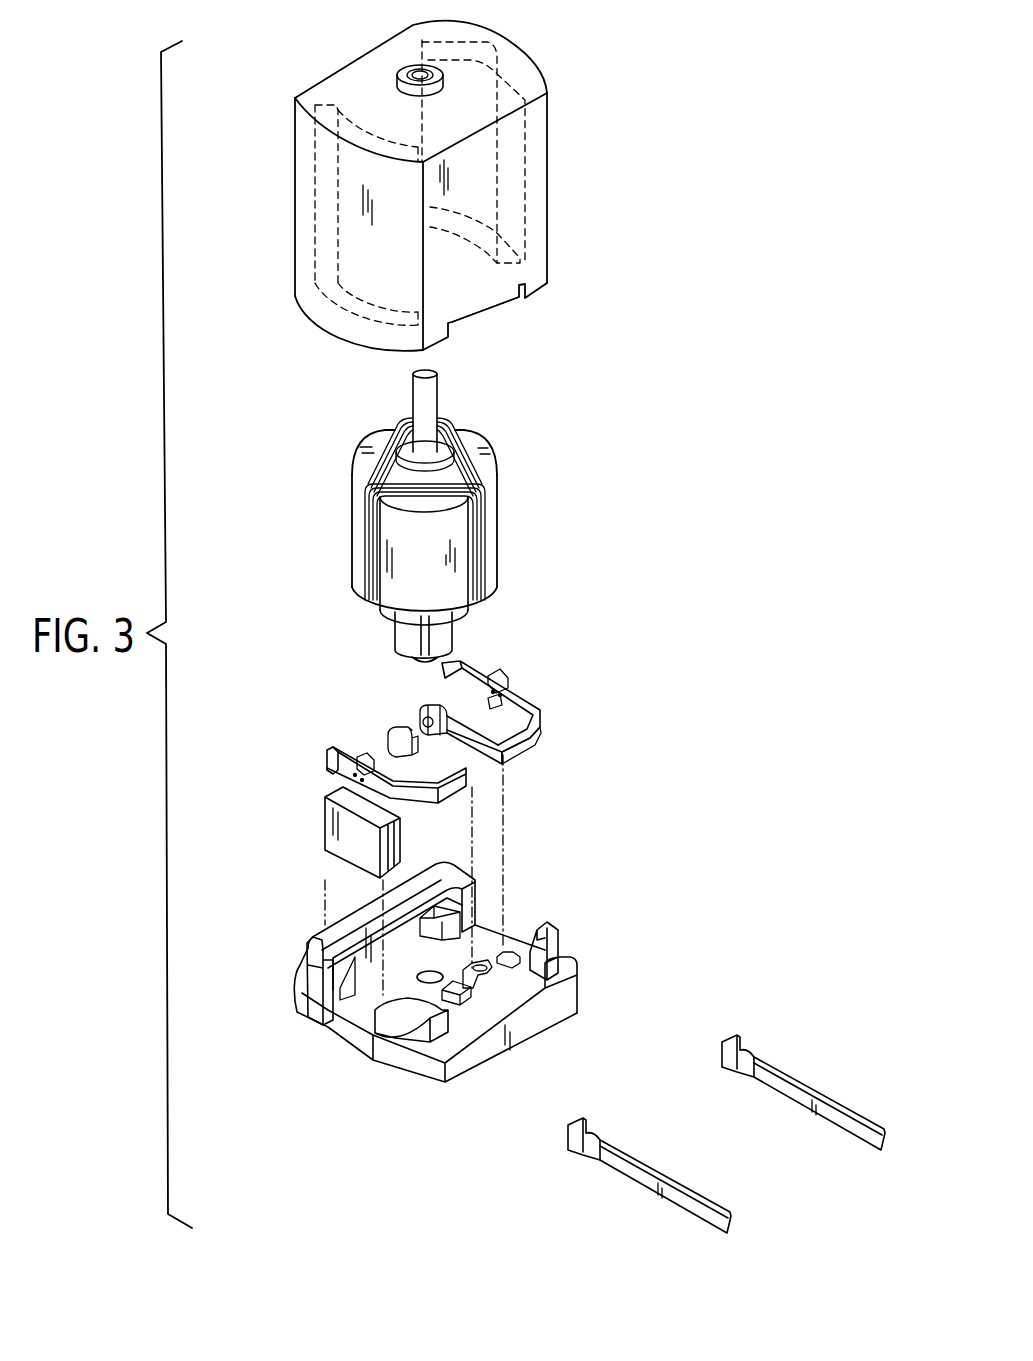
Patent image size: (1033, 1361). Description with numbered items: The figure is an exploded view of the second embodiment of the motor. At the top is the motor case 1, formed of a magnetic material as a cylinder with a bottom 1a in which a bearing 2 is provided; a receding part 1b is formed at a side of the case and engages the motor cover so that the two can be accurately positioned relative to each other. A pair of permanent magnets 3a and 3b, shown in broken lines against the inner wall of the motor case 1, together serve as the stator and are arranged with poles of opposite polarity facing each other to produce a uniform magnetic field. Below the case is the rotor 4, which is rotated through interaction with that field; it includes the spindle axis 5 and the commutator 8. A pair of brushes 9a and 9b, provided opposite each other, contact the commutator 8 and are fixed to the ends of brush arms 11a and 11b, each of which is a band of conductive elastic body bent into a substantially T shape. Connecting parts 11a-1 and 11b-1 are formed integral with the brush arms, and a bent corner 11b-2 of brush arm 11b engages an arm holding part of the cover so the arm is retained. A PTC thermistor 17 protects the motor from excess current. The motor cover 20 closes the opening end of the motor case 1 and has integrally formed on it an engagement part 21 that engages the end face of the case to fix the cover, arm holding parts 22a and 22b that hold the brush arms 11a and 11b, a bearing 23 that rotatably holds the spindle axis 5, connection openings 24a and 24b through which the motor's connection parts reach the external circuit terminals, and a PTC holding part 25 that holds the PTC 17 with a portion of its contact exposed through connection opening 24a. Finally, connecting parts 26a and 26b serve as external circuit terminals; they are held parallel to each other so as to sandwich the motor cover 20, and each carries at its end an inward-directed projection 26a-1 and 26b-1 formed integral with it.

The motor case 1 is at (558, 177).
The bottom 1a is at (372, 68).
The receding part 1b is at (485, 305).
The bearing 2 is at (440, 82).
The permanent magnet 3a is at (305, 257).
The permanent magnet 3b is at (547, 210).
The rotor 4 is at (500, 461).
The spindle axis 5 is at (432, 400).
The commutator 8 is at (440, 632).
The brush 9a is at (392, 728).
The brush 9b is at (426, 702).
The brush arm 11a is at (325, 769).
The connecting part 11a-1 is at (362, 757).
The brush arm 11b is at (552, 695).
The connecting part 11b-1 is at (503, 680).
The bent corner 11b-2 is at (518, 752).
The PTC thermistor 17 is at (332, 832).
The motor cover 20 is at (584, 951).
The engagement part 21 is at (408, 1015).
The arm holding part 22a is at (472, 993).
The arm holding part 22b is at (510, 962).
The bearing 23 is at (436, 975).
The connection opening 24a is at (318, 1005).
The connection opening 24b is at (472, 903).
The PTC holding part 25 is at (318, 953).
The connecting part 26a is at (646, 1185).
The projection 26a-1 is at (598, 1130).
The connecting part 26b is at (805, 1082).
The projection 26b-1 is at (744, 1078).